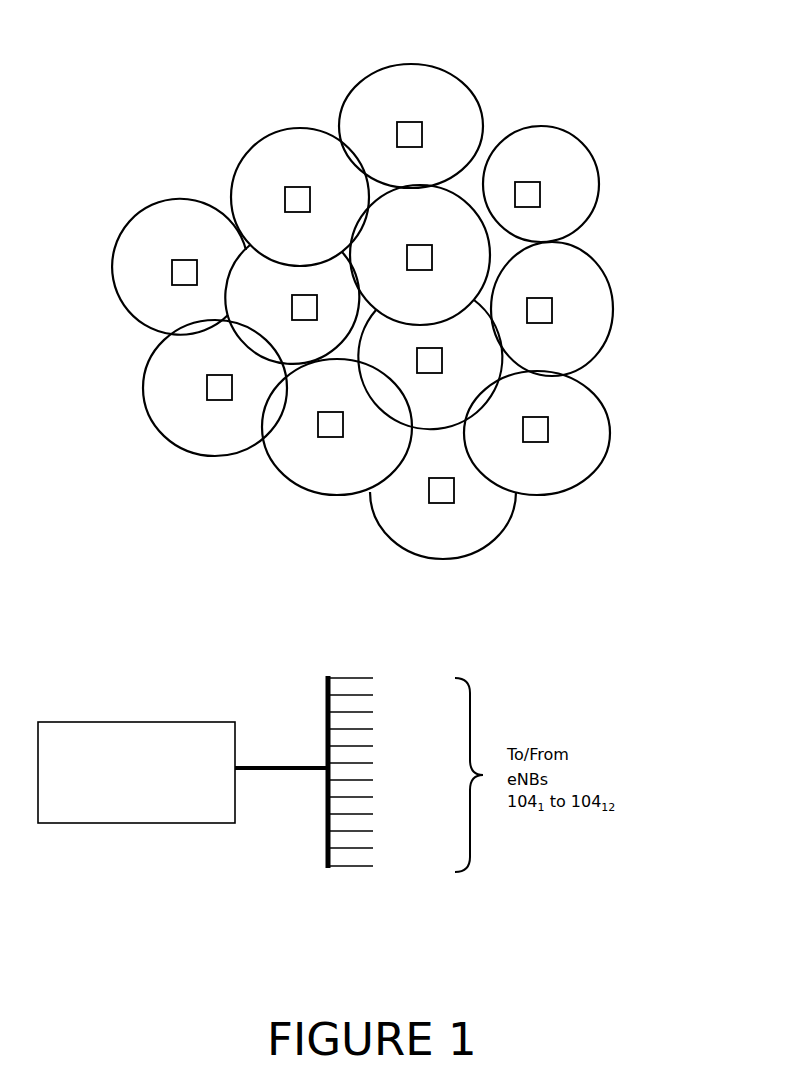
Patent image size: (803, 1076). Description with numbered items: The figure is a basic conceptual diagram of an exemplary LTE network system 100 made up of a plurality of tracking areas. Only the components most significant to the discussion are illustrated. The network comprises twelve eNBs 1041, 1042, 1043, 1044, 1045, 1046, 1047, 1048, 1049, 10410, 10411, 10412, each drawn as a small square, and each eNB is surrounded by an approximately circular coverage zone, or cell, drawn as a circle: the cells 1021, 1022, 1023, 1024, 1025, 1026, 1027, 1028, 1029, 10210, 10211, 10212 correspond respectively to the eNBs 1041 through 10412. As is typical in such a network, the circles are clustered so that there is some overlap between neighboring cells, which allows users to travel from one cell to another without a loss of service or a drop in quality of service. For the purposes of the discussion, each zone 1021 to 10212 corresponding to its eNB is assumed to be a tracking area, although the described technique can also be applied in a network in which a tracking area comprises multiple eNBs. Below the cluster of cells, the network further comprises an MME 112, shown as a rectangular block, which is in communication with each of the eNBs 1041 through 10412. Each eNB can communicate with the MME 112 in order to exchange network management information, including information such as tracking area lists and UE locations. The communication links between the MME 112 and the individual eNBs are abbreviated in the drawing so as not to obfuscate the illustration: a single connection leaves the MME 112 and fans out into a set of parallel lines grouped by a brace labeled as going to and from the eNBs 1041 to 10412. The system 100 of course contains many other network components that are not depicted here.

The network system 100 is at (692, 88).
The coverage zone (cell) 1021 is at (143, 210).
The coverage zone (cell) 1022 is at (253, 142).
The coverage zone (cell) 1023 is at (247, 303).
The coverage zone (cell) 1024 is at (163, 433).
The coverage zone (cell) 1025 is at (393, 65).
The coverage zone (cell) 1026 is at (480, 243).
The coverage zone (cell) 1027 is at (457, 400).
The coverage zone (cell) 1028 is at (315, 490).
The coverage zone (cell) 1029 is at (557, 127).
The coverage zone (cell) 10210 is at (613, 327).
The coverage zone (cell) 10211 is at (612, 432).
The coverage zone (cell) 10212 is at (492, 537).
The eNB 1041 is at (180, 277).
The eNB 1042 is at (285, 193).
The eNB 1043 is at (296, 312).
The eNB 1044 is at (212, 386).
The eNB 1045 is at (417, 128).
The eNB 1046 is at (420, 253).
The eNB 1047 is at (420, 370).
The eNB 1048 is at (322, 427).
The eNB 1049 is at (532, 190).
The eNB 10410 is at (547, 308).
The eNB 10411 is at (547, 437).
The eNB 10412 is at (440, 497).
The MME 112 is at (208, 823).